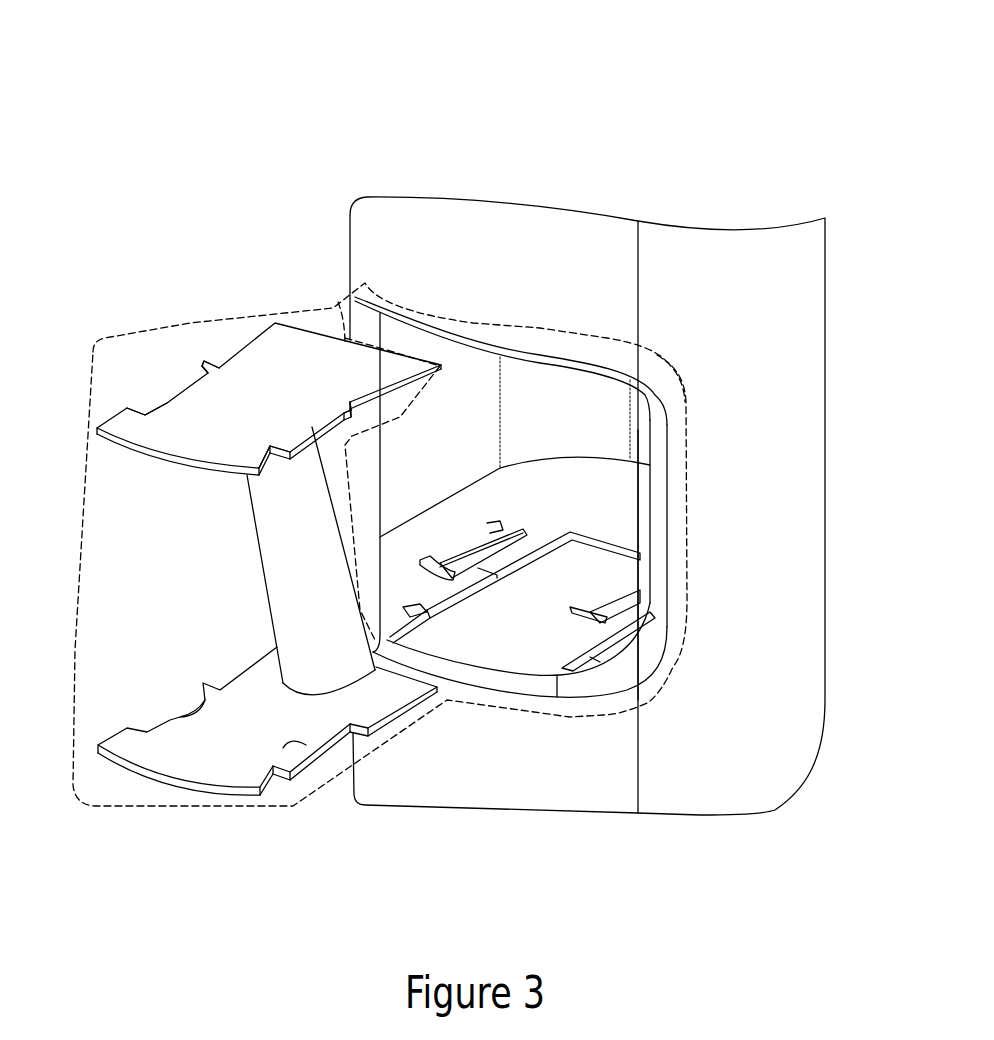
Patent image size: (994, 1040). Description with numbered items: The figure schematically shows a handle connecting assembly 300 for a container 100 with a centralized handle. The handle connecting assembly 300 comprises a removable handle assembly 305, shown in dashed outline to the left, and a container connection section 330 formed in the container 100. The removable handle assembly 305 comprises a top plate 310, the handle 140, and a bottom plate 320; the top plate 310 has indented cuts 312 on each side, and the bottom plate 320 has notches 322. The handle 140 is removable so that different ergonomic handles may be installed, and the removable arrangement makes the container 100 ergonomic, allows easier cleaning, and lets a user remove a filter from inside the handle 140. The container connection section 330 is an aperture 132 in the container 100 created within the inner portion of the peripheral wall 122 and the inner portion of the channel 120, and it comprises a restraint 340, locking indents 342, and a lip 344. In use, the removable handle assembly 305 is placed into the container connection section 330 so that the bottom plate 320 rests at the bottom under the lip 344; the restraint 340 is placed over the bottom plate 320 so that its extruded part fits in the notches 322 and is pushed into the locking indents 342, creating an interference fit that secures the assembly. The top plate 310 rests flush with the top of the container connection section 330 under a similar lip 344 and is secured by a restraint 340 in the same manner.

The handle connecting assembly 300 is at (110, 102).
The container 100 is at (477, 218).
The channel 120 is at (638, 432).
The peripheral wall 122 is at (657, 543).
The aperture 132 is at (683, 390).
The handle 140 is at (257, 565).
The removable handle assembly 305 is at (80, 630).
The top plate 310 is at (253, 378).
The indented cuts 312 is at (163, 397).
The bottom plate 320 is at (153, 760).
The notches 322 is at (195, 707).
The container connection section 330 is at (708, 515).
The restraint 340 is at (457, 575).
The locking indents 342 is at (487, 575).
The lip 344 is at (537, 560).